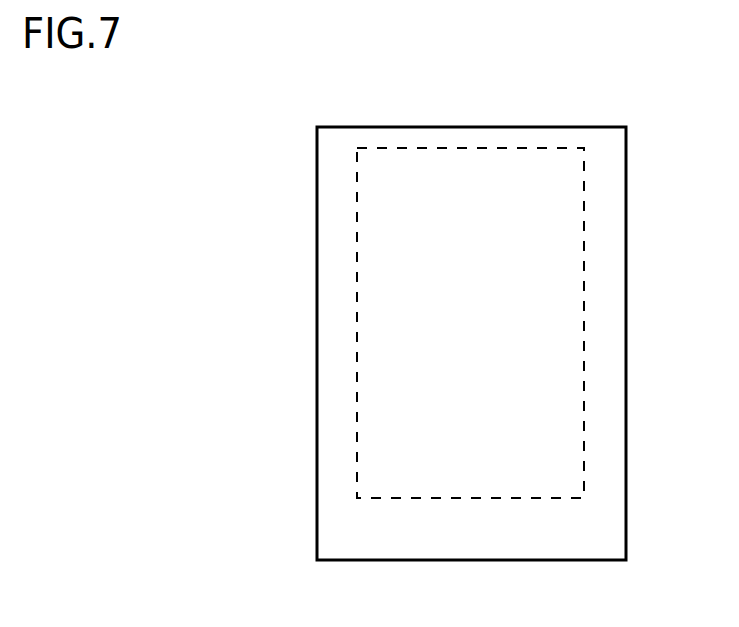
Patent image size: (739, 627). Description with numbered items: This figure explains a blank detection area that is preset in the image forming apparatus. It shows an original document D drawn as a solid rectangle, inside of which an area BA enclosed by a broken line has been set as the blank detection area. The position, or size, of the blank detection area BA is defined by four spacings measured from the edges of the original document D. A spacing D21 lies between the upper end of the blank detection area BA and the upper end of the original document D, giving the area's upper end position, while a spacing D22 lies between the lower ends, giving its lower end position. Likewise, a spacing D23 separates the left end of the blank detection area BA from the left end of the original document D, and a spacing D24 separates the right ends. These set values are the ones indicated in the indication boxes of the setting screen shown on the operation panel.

The original document D is at (326, 127).
The blank detection area BA is at (560, 148).
The spacing D21 is at (398, 173).
The spacing D22 is at (398, 475).
The spacing D23 is at (380, 432).
The spacing D24 is at (560, 432).